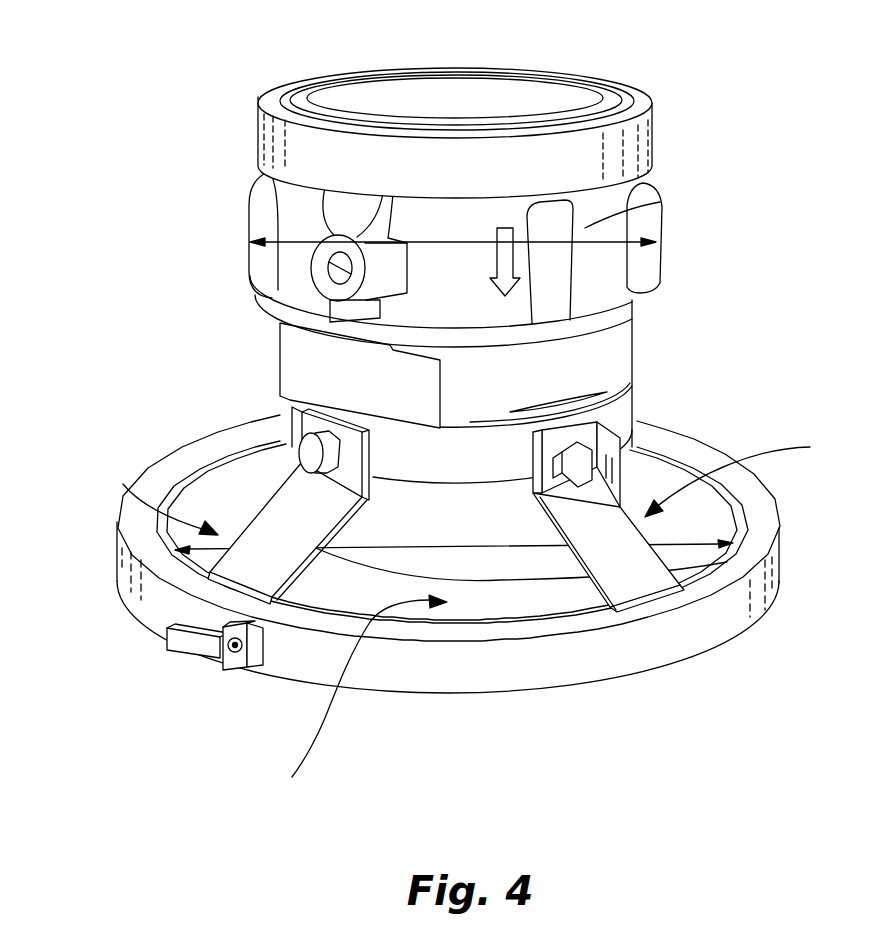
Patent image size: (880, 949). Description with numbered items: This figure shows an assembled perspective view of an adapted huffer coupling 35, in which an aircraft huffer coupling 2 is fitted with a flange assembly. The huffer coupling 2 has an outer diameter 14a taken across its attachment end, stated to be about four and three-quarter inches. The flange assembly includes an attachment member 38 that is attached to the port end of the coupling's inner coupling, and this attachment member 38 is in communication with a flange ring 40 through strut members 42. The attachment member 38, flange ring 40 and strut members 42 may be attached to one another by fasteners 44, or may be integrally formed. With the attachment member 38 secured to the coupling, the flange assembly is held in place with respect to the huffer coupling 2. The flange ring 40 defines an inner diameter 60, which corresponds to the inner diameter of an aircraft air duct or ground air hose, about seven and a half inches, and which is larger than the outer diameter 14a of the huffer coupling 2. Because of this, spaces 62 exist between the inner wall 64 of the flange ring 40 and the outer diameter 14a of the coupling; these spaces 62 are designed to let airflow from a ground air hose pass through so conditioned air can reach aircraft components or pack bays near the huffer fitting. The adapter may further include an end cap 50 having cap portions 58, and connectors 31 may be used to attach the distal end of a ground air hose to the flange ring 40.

The adapted huffer coupling 35 is at (150, 86).
The huffer coupling 2 is at (236, 96).
The outer diameter 14a is at (600, 240).
The attachment member 38 is at (624, 408).
The fasteners 44 is at (313, 452).
The strut members 42 is at (280, 530).
The flange ring 40 is at (143, 533).
The inner diameter 60 is at (680, 545).
The inner wall 64 is at (233, 490).
The spaces 62 is at (123, 484).
The cap portions 58 is at (470, 577).
The end cap 50 is at (513, 553).
The connectors 31 is at (202, 647).